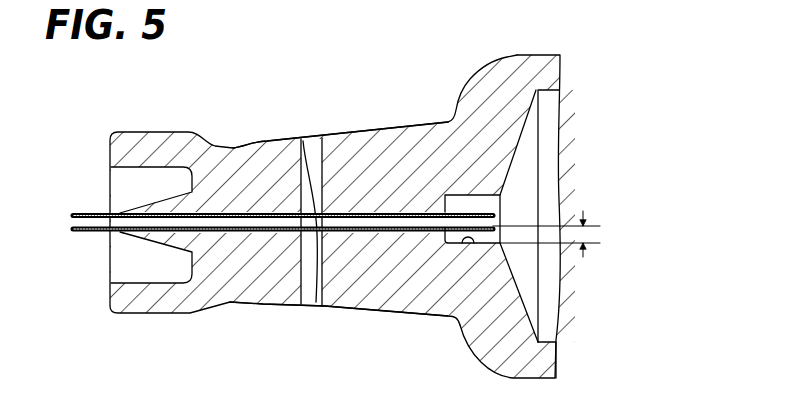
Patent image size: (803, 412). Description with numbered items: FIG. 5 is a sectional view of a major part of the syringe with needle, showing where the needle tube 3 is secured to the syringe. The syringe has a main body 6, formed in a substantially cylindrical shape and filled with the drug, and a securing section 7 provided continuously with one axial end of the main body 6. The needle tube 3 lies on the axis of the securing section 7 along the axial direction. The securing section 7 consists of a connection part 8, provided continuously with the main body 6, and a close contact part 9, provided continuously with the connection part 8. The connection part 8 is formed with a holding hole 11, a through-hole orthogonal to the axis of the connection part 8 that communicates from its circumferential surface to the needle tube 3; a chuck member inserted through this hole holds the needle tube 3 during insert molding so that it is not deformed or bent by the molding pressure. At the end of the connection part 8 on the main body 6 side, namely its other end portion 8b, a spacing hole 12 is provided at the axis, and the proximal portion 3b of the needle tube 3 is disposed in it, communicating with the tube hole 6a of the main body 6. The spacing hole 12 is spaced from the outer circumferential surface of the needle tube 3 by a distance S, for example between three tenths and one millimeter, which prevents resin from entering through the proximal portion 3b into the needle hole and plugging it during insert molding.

The needle tube 3 is at (303, 140).
The proximal portion 3b is at (493, 213).
The main body 6 is at (561, 66).
The tube hole 6a is at (556, 341).
The securing section 7 is at (190, 357).
The connection part 8 is at (273, 303).
The other end portion 8b is at (522, 147).
The close contact part 9 is at (172, 312).
The holding hole 11 is at (317, 300).
The spacing hole 12 is at (473, 245).
The distance S is at (548, 234).